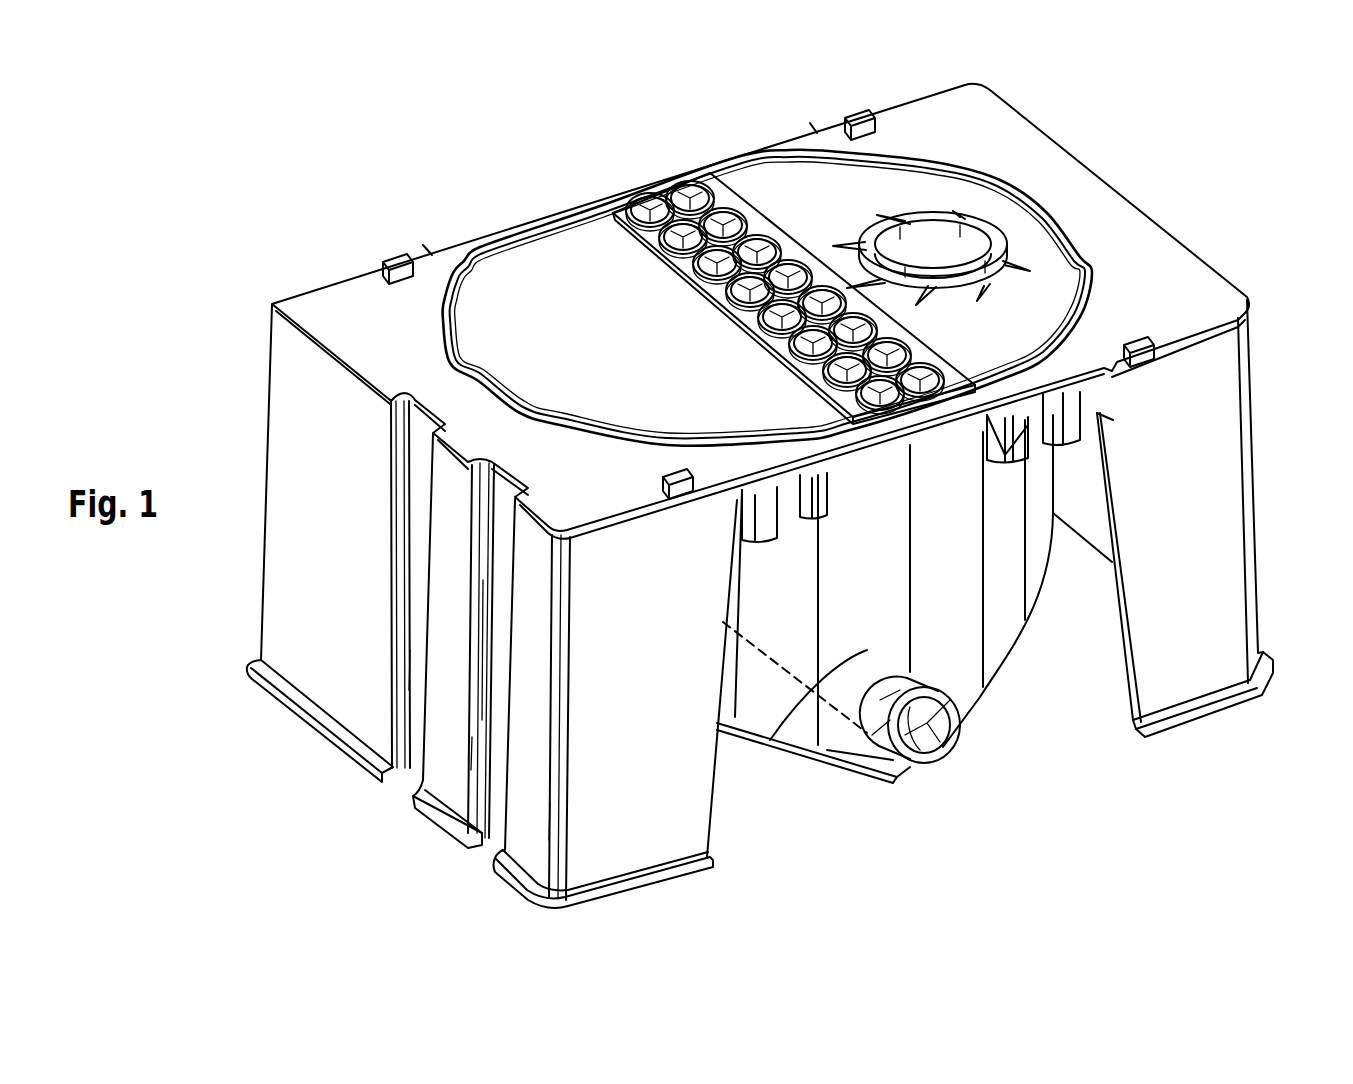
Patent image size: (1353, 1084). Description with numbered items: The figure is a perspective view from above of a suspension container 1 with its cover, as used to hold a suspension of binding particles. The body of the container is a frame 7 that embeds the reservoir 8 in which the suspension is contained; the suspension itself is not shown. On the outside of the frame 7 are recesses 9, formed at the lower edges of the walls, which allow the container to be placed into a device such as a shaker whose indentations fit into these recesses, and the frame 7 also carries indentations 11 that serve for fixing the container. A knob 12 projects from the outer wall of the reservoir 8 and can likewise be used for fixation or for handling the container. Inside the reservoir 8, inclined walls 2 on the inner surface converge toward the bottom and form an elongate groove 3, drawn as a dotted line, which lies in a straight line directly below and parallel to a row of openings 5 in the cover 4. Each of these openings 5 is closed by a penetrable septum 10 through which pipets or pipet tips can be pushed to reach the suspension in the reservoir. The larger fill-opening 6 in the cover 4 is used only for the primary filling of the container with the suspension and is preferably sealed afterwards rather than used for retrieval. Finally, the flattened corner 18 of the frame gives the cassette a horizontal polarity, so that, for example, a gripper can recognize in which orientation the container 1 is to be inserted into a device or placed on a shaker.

The suspension container 1 is at (1182, 212).
The inclined walls 2 is at (993, 675).
The elongate groove 3 is at (793, 677).
The cover 4 is at (770, 190).
The openings 5 is at (655, 202).
The fill-opening 6 is at (960, 248).
The frame 7 is at (365, 312).
The reservoir 8 is at (993, 572).
The recesses 9 is at (420, 683).
The penetrable septum 10 is at (668, 243).
The indentations 11 is at (1010, 437).
The knob 12 is at (947, 740).
The flattened corner 18 is at (1251, 452).